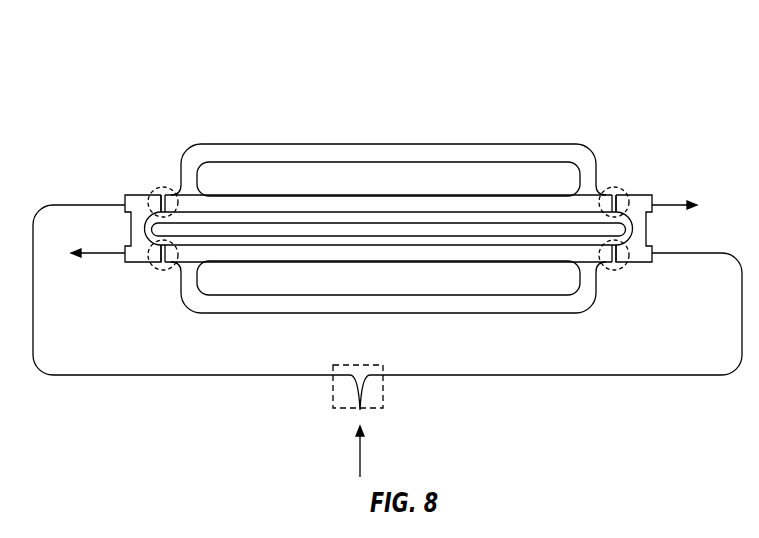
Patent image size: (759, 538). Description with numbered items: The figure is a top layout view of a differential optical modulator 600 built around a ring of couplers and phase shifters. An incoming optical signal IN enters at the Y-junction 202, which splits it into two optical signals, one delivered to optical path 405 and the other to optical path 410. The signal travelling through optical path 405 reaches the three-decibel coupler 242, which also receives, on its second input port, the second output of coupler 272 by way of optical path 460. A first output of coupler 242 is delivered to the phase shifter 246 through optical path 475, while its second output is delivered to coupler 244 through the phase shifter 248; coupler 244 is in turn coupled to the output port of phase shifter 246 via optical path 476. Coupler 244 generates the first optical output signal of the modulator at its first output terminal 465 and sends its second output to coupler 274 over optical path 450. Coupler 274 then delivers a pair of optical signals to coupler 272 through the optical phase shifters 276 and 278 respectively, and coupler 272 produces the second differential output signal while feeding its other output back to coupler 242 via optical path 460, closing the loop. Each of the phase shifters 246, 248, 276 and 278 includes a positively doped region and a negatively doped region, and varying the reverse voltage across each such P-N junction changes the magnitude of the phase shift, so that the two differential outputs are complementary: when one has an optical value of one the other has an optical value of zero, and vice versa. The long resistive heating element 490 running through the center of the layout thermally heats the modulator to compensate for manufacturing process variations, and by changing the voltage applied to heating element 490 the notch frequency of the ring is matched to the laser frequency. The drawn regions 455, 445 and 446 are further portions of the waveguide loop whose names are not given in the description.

The interconnect assembly 600 is at (652, 65).
The optical path 405 is at (177, 376).
The optical path 410 is at (600, 376).
The Y-junction 202 is at (366, 411).
The optical path 460 is at (128, 233).
The optical path 450 is at (646, 227).
The resistive heating element 490 is at (268, 238).
The phase shifter 246 is at (432, 144).
The phase shifter 248 is at (483, 192).
The optical phase shifter 276 is at (423, 256).
The optical phase shifter 278 is at (496, 316).
The first output terminal 465 is at (214, 200).
The lower inner loop 455 is at (209, 258).
The optical path 475 is at (193, 146).
The optical path 476 is at (582, 146).
The left lower outer loop segment 445 is at (200, 313).
The right lower outer loop segment 446 is at (578, 312).
The 3 dB coupler 242 is at (166, 189).
The coupler 244 is at (612, 189).
The 3 dB coupler 272 is at (163, 273).
The coupler 274 is at (614, 273).